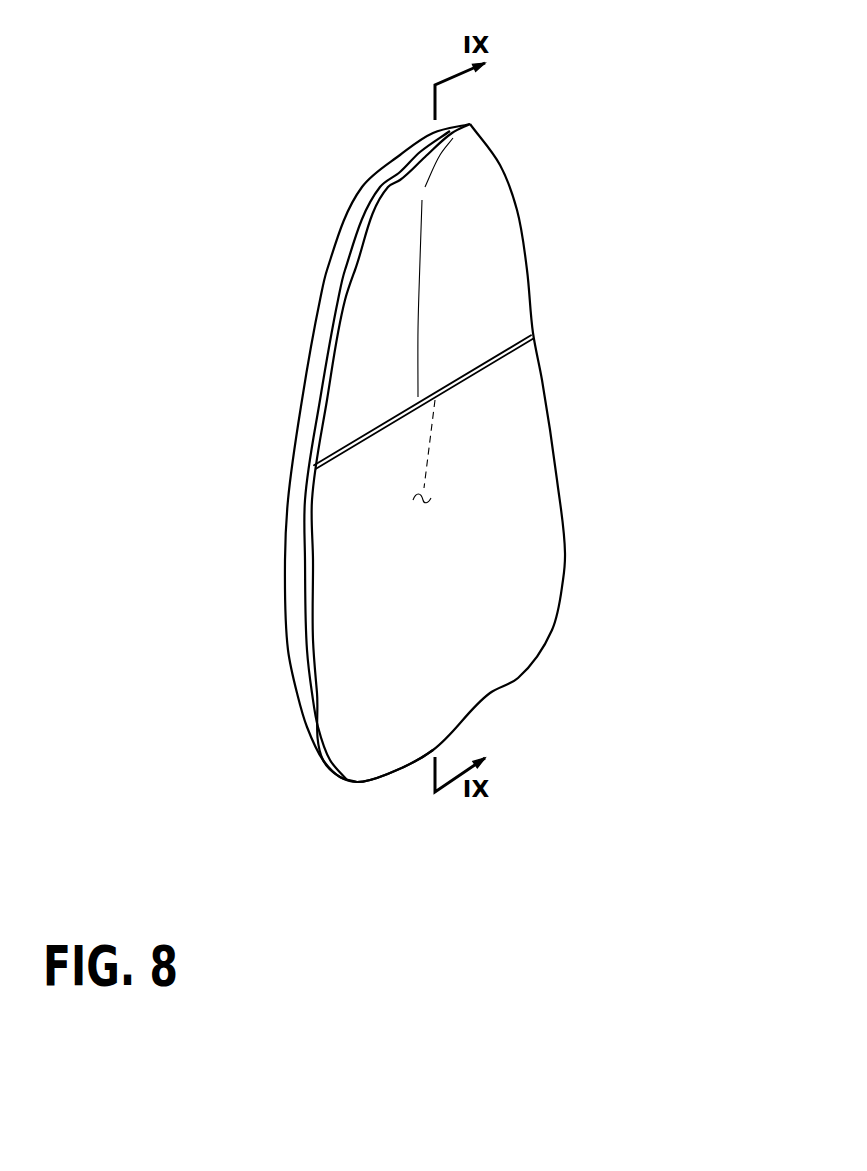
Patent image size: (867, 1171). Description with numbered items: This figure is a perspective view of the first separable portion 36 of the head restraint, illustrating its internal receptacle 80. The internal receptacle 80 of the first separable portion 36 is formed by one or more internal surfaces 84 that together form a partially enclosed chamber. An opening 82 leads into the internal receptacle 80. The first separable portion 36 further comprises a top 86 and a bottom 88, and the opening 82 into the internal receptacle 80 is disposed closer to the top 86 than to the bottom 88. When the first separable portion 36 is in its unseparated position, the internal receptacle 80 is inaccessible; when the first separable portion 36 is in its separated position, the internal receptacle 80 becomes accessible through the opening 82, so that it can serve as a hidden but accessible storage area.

The first separable portion 36 is at (562, 160).
The internal receptacle 80 is at (437, 388).
The opening 82 is at (390, 403).
The internal surfaces 84 is at (430, 261).
The top 86 is at (438, 138).
The bottom 88 is at (409, 767).